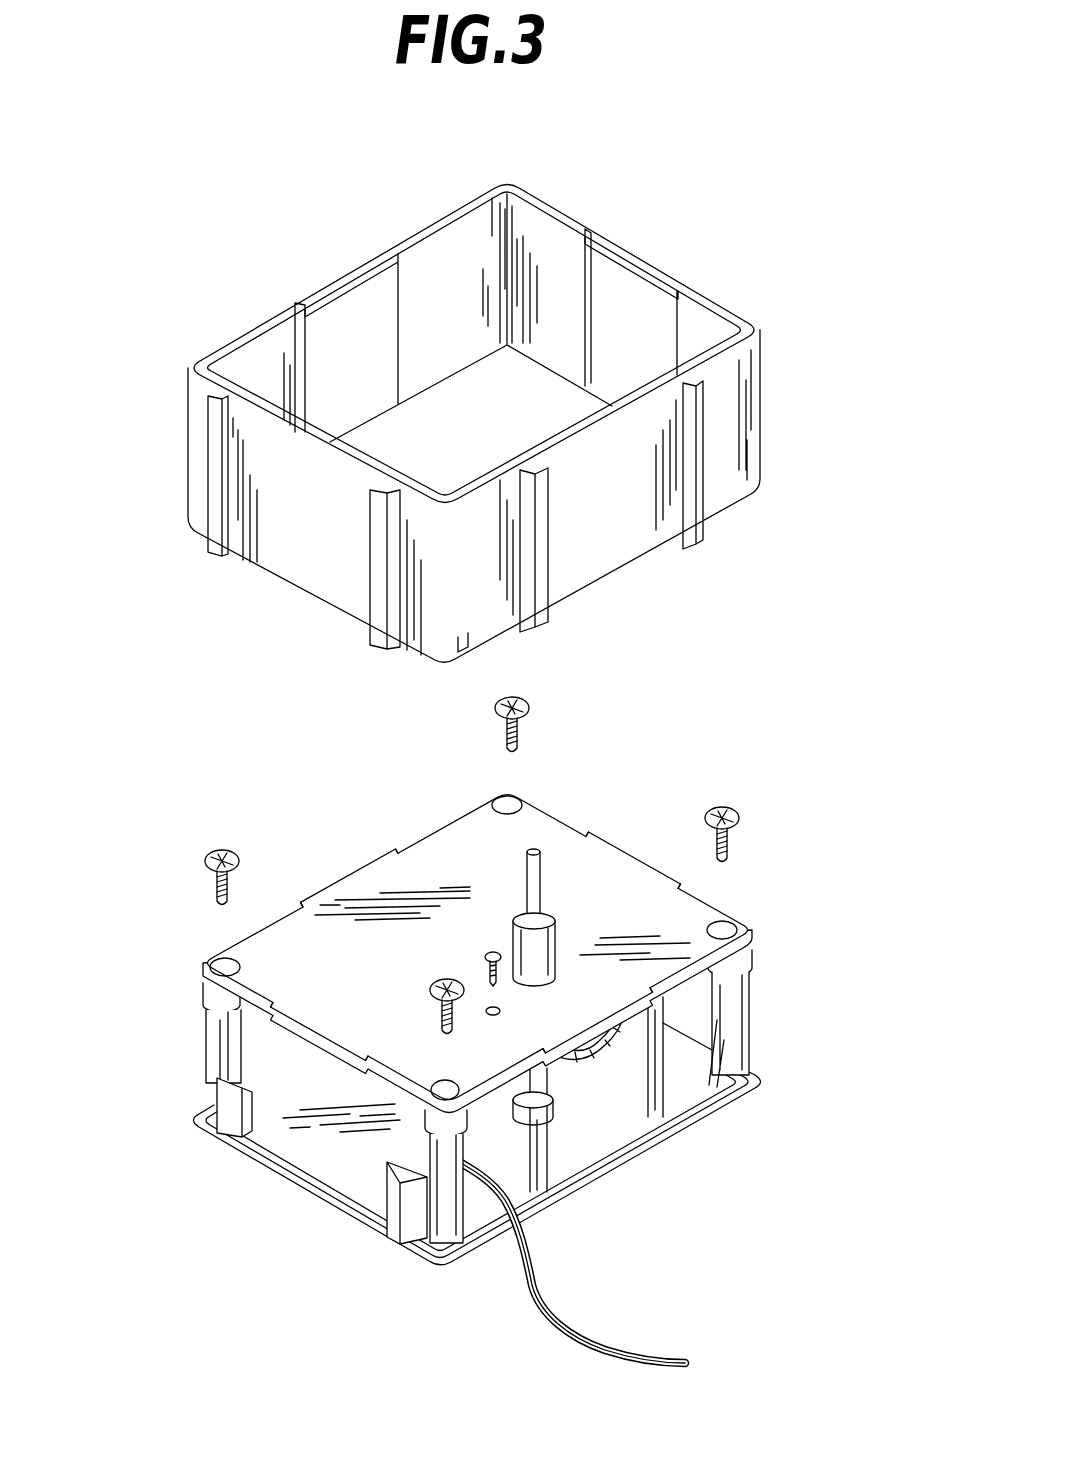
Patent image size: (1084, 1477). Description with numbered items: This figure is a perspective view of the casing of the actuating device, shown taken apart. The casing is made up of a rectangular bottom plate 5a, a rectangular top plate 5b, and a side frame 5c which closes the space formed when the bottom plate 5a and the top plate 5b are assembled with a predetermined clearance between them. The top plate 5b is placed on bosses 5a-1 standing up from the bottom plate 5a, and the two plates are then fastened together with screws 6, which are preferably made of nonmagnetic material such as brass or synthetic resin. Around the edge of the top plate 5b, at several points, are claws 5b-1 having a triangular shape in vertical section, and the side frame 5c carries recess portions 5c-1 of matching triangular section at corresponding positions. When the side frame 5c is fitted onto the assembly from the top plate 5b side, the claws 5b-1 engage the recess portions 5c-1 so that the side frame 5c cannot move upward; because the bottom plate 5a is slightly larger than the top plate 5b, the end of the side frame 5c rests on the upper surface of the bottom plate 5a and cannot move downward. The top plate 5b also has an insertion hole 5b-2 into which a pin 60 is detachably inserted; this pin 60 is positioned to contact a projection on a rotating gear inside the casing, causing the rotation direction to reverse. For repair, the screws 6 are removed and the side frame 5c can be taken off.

The bottom plate 5a is at (570, 1160).
The bosses 5a-1 is at (728, 990).
The top plate 5b is at (630, 865).
The claws 5b-1 is at (603, 838).
The insertion hole 5b-2 is at (500, 1016).
The side frame 5c is at (692, 428).
The recess portions 5c-1 is at (360, 276).
The screws 6 is at (530, 706).
The pin 60 is at (480, 955).